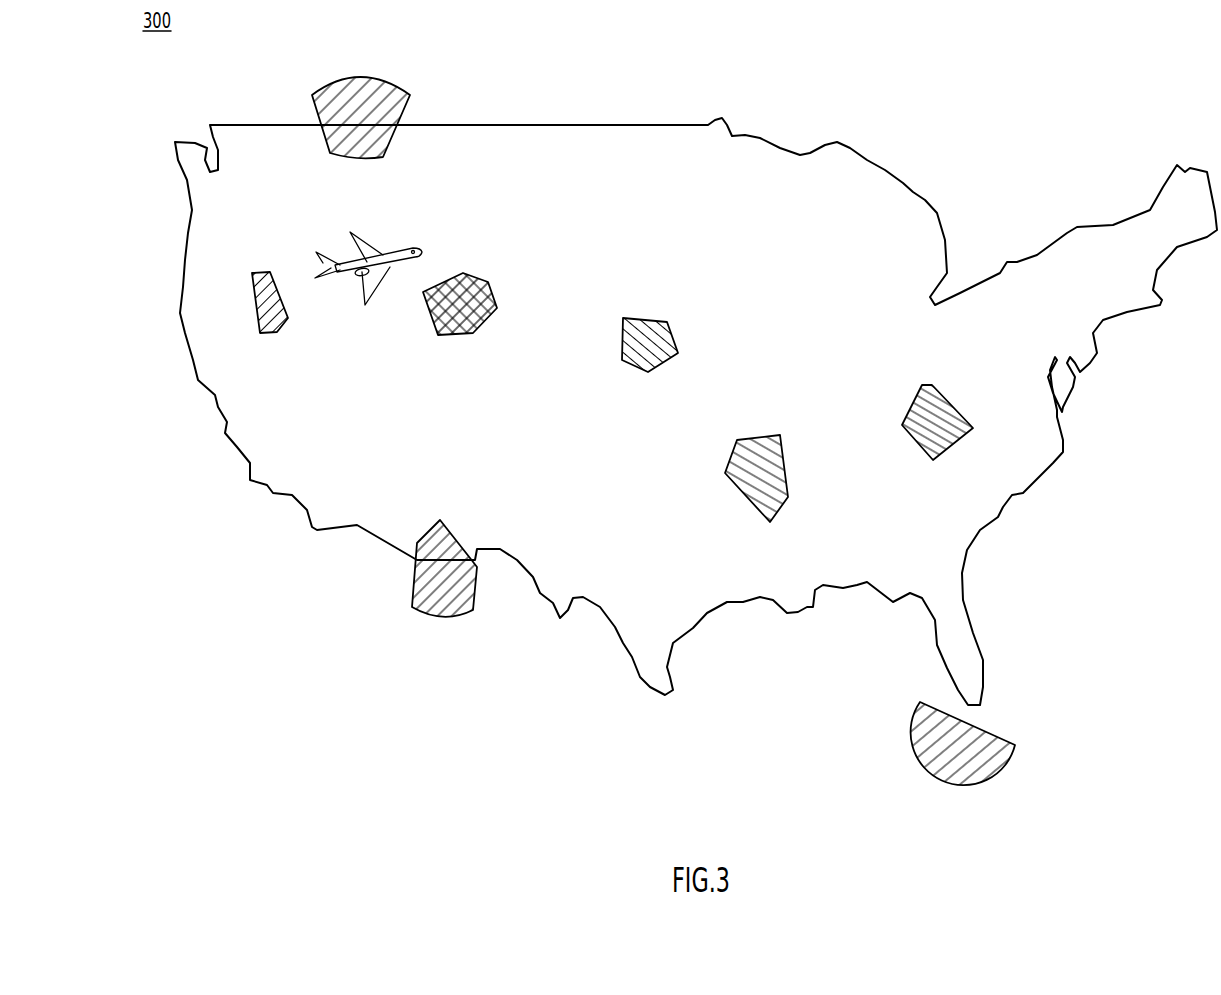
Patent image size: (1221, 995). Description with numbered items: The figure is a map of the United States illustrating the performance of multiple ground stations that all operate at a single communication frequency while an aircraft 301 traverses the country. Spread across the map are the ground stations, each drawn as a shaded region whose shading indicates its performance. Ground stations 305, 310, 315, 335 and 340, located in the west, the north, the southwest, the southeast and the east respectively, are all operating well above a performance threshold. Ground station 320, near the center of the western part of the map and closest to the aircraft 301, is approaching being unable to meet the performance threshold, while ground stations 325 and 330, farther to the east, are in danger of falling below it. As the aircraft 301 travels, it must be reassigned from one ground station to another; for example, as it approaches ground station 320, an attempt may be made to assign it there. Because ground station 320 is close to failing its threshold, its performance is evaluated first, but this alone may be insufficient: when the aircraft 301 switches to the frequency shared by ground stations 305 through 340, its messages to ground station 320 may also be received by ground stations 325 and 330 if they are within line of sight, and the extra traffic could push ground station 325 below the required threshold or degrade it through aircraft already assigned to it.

The aircraft 301 is at (395, 248).
The ground station 305 is at (250, 312).
The ground station 310 is at (370, 77).
The ground station 315 is at (437, 527).
The ground station 320 is at (497, 290).
The ground station 325 is at (645, 318).
The ground station 330 is at (757, 438).
The ground station 335 is at (997, 720).
The ground station 340 is at (957, 407).